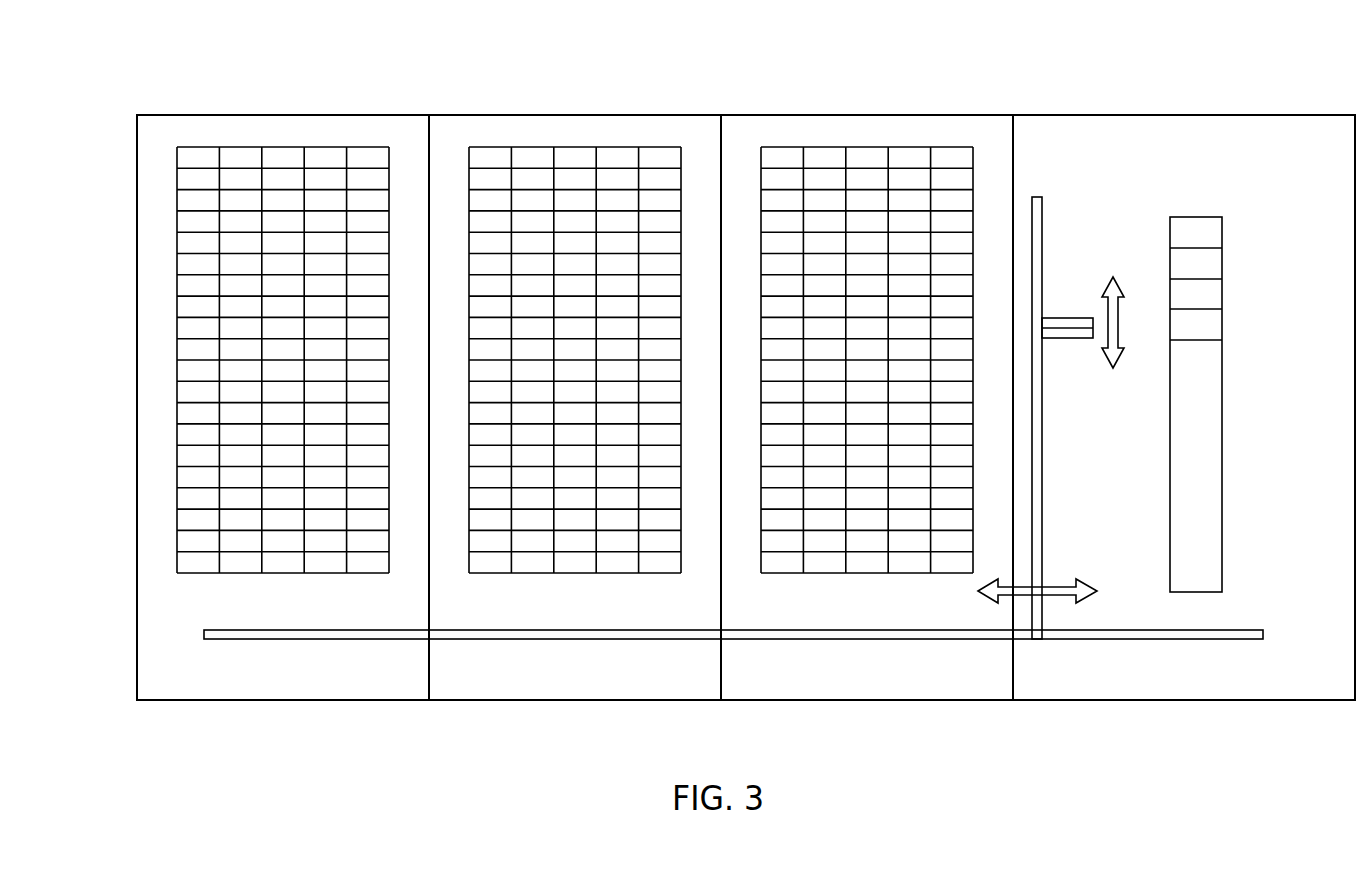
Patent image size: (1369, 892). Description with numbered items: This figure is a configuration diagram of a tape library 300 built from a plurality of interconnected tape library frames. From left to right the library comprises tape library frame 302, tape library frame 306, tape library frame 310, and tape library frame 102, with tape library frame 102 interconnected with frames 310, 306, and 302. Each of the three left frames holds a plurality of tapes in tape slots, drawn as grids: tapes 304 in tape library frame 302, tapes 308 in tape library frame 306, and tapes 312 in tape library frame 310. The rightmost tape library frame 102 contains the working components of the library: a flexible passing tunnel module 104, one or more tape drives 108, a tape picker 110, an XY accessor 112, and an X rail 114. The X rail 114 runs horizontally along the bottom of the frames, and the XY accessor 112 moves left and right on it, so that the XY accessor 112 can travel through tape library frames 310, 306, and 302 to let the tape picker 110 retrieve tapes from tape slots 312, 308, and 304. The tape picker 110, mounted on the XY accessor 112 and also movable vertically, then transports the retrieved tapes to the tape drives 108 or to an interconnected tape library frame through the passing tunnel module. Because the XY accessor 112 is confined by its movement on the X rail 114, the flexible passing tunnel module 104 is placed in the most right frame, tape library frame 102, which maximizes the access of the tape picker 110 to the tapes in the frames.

The tape library 300 is at (345, 68).
The tape library frame 302 is at (303, 431).
The tapes 304 is at (283, 387).
The tape library frame 306 is at (593, 431).
The tapes 308 is at (575, 387).
The tape library frame 310 is at (885, 431).
The tapes 312 is at (867, 387).
The tape library frame 102 is at (1160, 670).
The flexible passing tunnel module 104 is at (1205, 217).
The tape drives 108 is at (1222, 295).
The tape picker 110 is at (1069, 308).
The XY accessor 112 is at (1040, 455).
The X rail 114 is at (1241, 630).